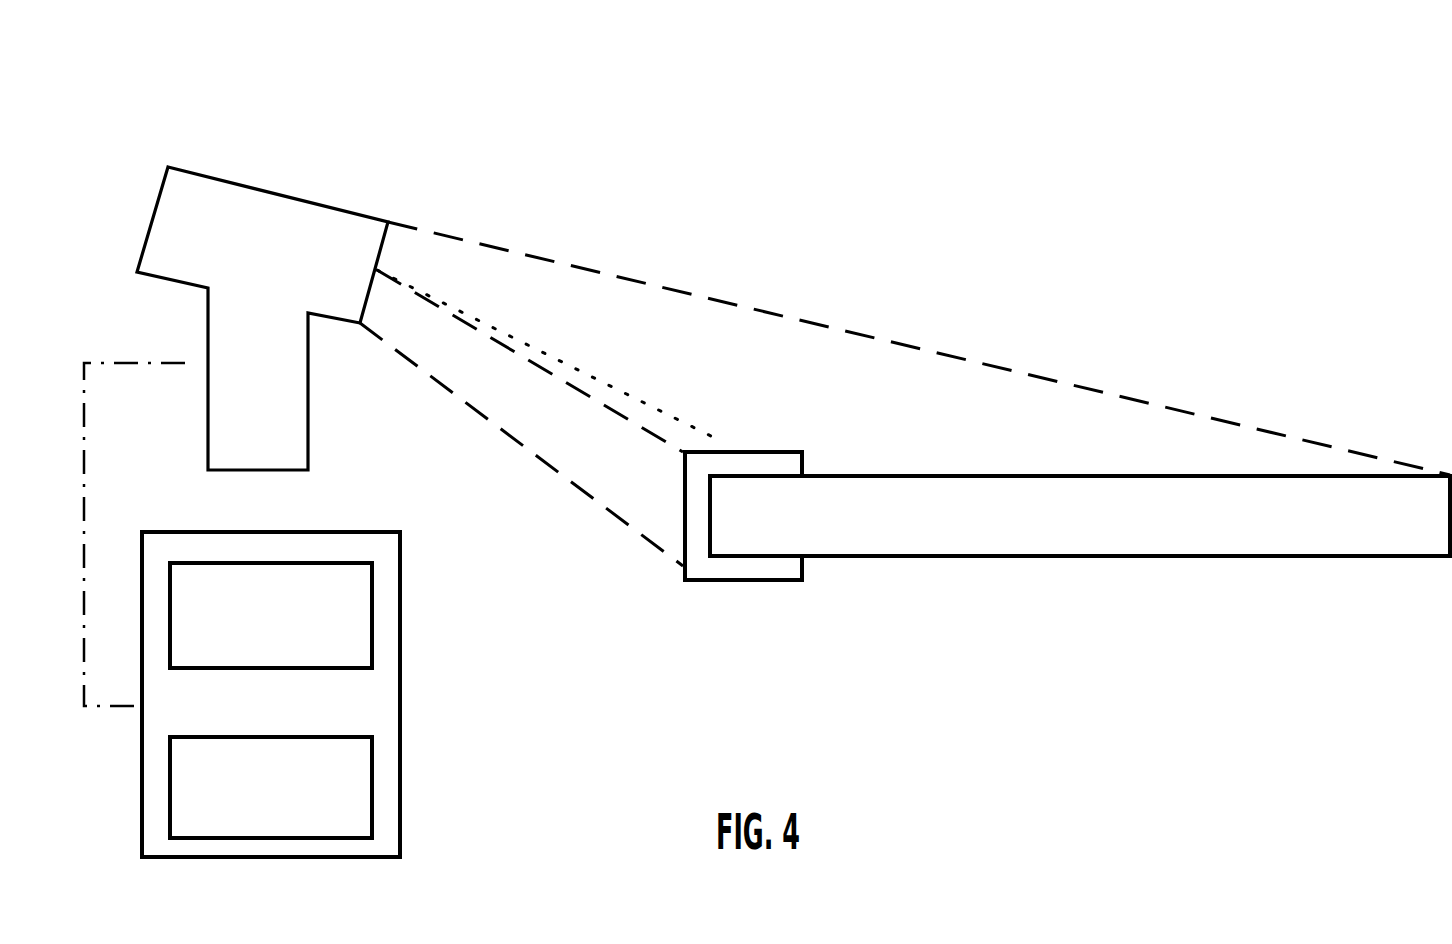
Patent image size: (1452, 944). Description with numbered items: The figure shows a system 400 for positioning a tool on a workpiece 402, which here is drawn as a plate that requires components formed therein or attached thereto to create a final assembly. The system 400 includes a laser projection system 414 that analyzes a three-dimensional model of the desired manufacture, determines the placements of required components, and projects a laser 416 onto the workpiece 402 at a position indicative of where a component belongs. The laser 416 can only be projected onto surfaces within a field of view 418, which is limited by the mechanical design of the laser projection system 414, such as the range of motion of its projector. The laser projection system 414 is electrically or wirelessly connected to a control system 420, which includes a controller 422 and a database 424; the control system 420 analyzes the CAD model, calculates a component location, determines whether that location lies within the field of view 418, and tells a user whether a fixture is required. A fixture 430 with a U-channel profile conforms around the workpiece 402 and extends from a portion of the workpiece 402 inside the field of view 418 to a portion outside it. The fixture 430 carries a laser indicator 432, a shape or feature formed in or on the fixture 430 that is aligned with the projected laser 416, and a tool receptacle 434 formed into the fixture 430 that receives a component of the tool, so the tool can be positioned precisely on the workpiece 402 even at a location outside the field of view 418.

The system 400 is at (1163, 68).
The workpiece 402 is at (1110, 528).
The laser projection system 414 is at (242, 256).
The laser 416 is at (578, 370).
The field of view 418 is at (570, 487).
The control system 420 is at (295, 530).
The controller 422 is at (271, 615).
The database 424 is at (271, 787).
The fixture 430 is at (803, 450).
The laser indicator 432 is at (750, 462).
The tool receptacle 434 is at (773, 561).